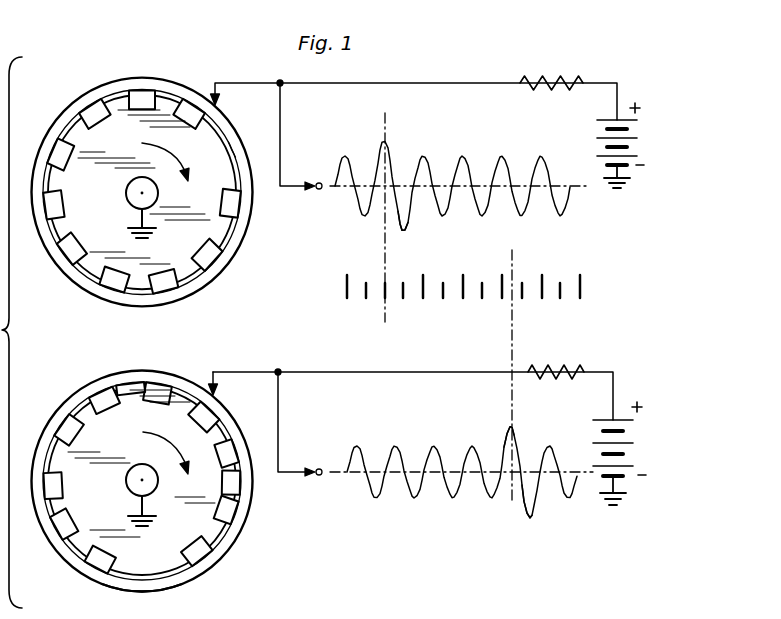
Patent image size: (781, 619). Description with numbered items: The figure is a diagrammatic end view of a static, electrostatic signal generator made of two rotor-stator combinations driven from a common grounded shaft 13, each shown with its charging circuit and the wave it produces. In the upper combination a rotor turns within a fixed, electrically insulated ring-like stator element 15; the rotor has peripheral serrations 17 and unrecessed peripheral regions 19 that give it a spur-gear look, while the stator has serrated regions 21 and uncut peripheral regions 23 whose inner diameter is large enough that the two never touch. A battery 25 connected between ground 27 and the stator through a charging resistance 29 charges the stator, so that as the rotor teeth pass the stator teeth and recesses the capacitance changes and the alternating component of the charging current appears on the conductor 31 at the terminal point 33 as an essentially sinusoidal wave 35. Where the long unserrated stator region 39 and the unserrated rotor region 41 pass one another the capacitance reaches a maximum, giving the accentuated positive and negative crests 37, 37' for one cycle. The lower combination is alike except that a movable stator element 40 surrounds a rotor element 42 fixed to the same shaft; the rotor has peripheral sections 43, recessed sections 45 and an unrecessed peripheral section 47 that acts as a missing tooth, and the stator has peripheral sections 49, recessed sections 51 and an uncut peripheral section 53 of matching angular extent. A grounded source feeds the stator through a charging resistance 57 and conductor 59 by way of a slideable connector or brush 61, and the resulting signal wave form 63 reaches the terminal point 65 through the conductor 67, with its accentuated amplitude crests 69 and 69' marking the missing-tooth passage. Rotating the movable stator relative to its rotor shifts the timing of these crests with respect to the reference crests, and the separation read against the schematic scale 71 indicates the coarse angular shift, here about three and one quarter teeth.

The grounded shaft 13 is at (126, 194).
The stator element 15 is at (240, 238).
The peripheral serrations 17 is at (235, 262).
The unrecessed peripheral regions 19 is at (208, 282).
The serrated regions 21 is at (160, 293).
The uncut peripheral regions 23 is at (192, 300).
The battery 25 is at (636, 140).
The ground 27 is at (144, 240).
The charging resistance 29 is at (548, 78).
The conductor 31 is at (283, 140).
The terminal point 33 is at (319, 182).
The sinusoidal wave 35 is at (483, 214).
The positive crest 37 is at (408, 215).
The negative crest 37' is at (417, 237).
The long unserrated stator region 39 is at (220, 140).
The movable stator element 40 is at (115, 580).
The unserrated rotor region 41 is at (222, 148).
The rotor element 42 is at (80, 545).
The peripheral sections 43 is at (232, 557).
The recessed sections 45 is at (250, 463).
The peripheral section 47 is at (178, 563).
The peripheral sections 49 is at (232, 540).
The recessed sections 51 is at (245, 513).
The uncut peripheral section 53 is at (166, 587).
The charging resistance 57 is at (548, 368).
The conductor 59 is at (336, 372).
The slideable connector or brush 61 is at (238, 392).
The signal wave form 63 is at (412, 500).
The terminal point 65 is at (319, 468).
The conductor 67 is at (283, 418).
The positive amplitude crest 69 is at (488, 424).
The negative amplitude crest 69' is at (541, 522).
The scale 71 is at (586, 294).